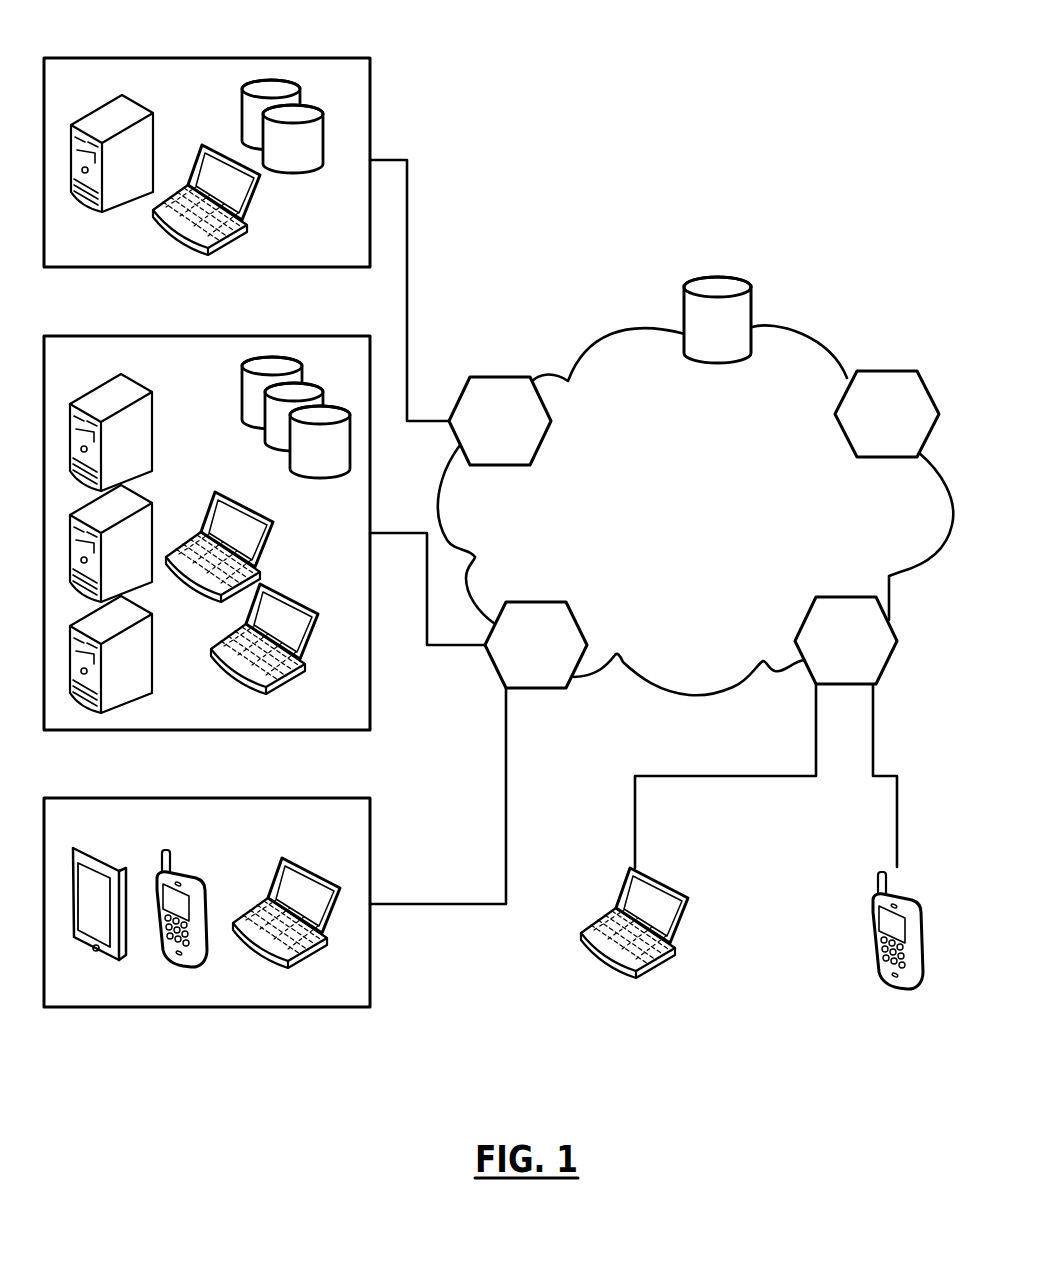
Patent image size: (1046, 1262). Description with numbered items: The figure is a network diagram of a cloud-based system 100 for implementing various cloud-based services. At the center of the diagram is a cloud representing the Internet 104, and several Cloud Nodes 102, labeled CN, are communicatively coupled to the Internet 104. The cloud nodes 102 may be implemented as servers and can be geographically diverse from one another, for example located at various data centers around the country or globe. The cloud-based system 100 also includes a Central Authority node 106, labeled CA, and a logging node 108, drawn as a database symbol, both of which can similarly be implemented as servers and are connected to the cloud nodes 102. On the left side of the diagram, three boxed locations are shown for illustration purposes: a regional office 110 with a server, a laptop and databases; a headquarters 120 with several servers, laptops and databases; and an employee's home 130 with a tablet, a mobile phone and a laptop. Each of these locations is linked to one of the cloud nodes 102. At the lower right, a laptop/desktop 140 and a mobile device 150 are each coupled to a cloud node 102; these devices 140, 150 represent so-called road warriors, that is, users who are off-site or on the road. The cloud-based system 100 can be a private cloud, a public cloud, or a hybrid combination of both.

The cloud-based system 100 is at (725, 101).
The cloud node 102 is at (493, 377).
The Internet 104 is at (828, 338).
The Central Authority node 106 is at (895, 370).
The logging node 108 is at (728, 275).
The regional office 110 is at (278, 57).
The headquarters 120 is at (287, 334).
The employee's home 130 is at (290, 797).
The laptop/desktop 140 is at (680, 893).
The mobile device 150 is at (866, 920).